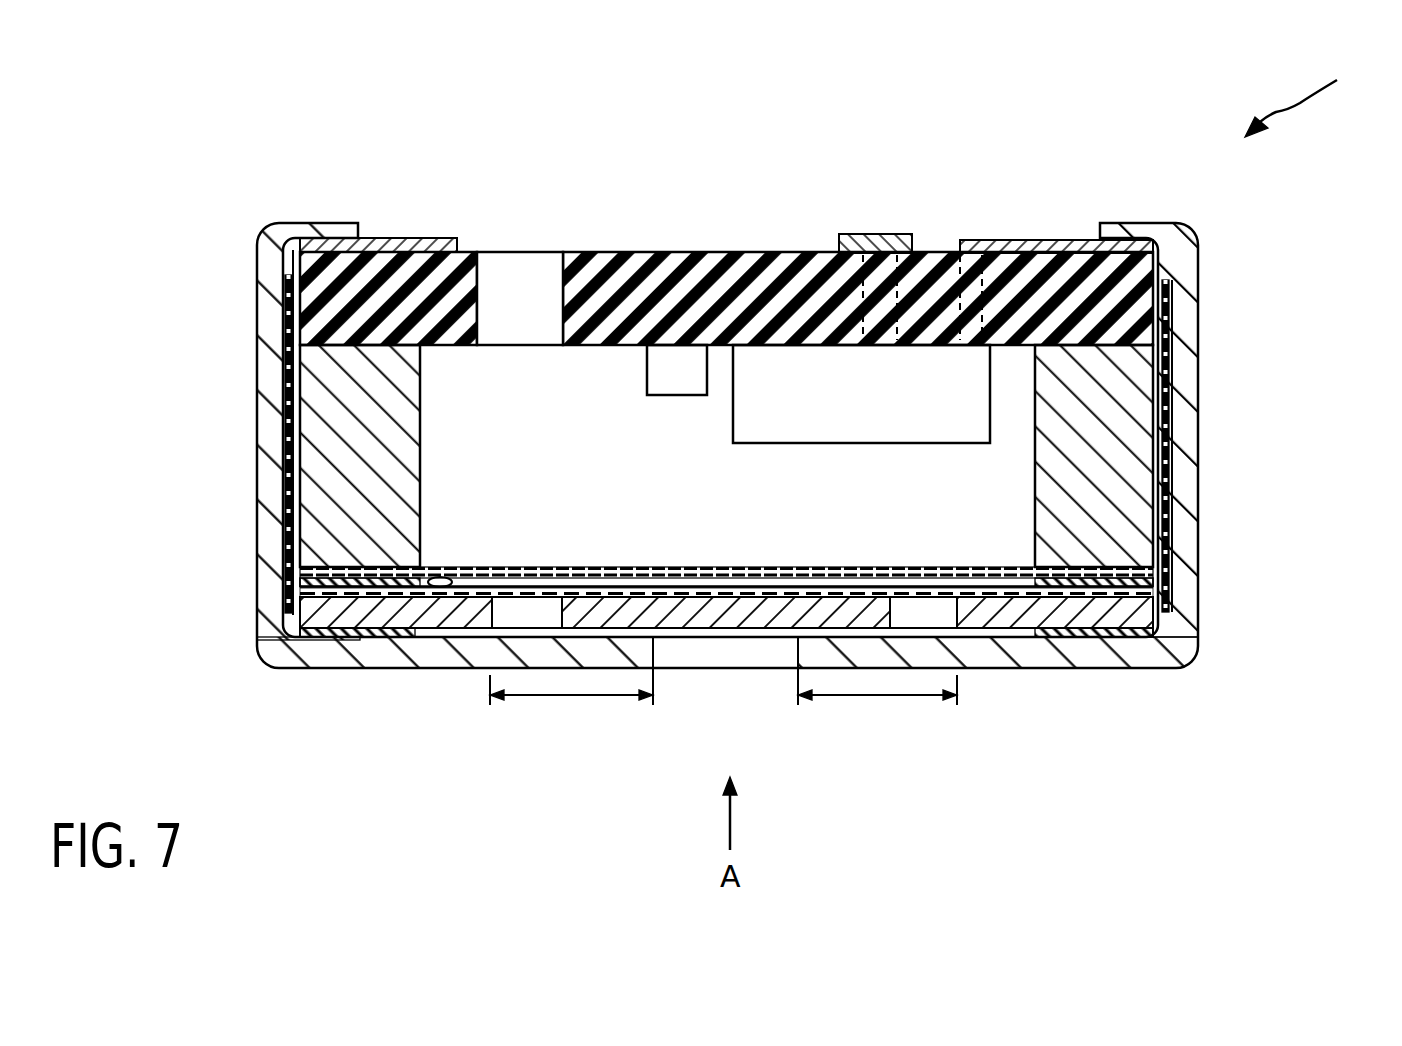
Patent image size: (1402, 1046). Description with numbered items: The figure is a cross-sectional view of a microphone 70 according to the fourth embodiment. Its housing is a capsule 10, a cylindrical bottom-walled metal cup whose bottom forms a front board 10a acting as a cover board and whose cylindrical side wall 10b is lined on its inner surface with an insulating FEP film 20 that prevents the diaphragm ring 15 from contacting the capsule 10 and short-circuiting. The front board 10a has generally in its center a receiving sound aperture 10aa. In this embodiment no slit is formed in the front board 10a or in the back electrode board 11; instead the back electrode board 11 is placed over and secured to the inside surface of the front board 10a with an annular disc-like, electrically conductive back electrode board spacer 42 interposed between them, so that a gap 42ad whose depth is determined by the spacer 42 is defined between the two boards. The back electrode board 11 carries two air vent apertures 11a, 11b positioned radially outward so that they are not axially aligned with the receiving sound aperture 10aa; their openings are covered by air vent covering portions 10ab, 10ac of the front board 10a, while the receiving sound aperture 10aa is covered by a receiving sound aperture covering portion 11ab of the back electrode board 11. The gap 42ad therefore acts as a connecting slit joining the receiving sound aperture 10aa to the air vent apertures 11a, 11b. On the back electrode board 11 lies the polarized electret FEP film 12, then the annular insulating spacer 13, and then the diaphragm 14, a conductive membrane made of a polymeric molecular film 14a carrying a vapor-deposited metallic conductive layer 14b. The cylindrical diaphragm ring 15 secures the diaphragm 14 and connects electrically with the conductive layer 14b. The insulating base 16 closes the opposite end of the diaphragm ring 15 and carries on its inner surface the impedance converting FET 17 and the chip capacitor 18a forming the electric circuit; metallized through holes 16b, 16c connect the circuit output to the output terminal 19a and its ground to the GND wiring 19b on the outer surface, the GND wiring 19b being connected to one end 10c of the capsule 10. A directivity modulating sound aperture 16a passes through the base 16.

The capsule 10 is at (1200, 347).
The front board 10a is at (365, 652).
The cylindrical side wall 10b is at (1183, 543).
The one end of the capsule 10c is at (1120, 230).
The receiving sound aperture 10aa is at (705, 660).
The air vent covering portion 10ab is at (525, 653).
The air vent covering portion 10ac is at (913, 657).
The back electrode board 11 is at (726, 580).
The air vent aperture 11a is at (520, 615).
The air vent aperture 11b is at (930, 615).
The receiving sound aperture covering portion 11ab is at (735, 613).
The FEP film 12 is at (437, 592).
The spacer 13 is at (300, 590).
The diaphragm 14 is at (611, 512).
The polymeric molecular film 14a is at (440, 568).
The conductive layer 14b is at (470, 580).
The diaphragm ring 15 is at (1132, 435).
The base 16 is at (1123, 275).
The directivity modulating sound aperture 16a is at (515, 275).
The through hole 16b is at (855, 275).
The through hole 16c is at (978, 275).
The FET 17 is at (793, 375).
The chip capacitor 18a is at (670, 365).
The output terminal 19a is at (884, 236).
The GND wiring 19b is at (422, 237).
The FEP film 20 is at (257, 305).
The back electrode board spacer 42 is at (317, 636).
The gap 42ad is at (860, 632).
The microphone 70 is at (1312, 95).